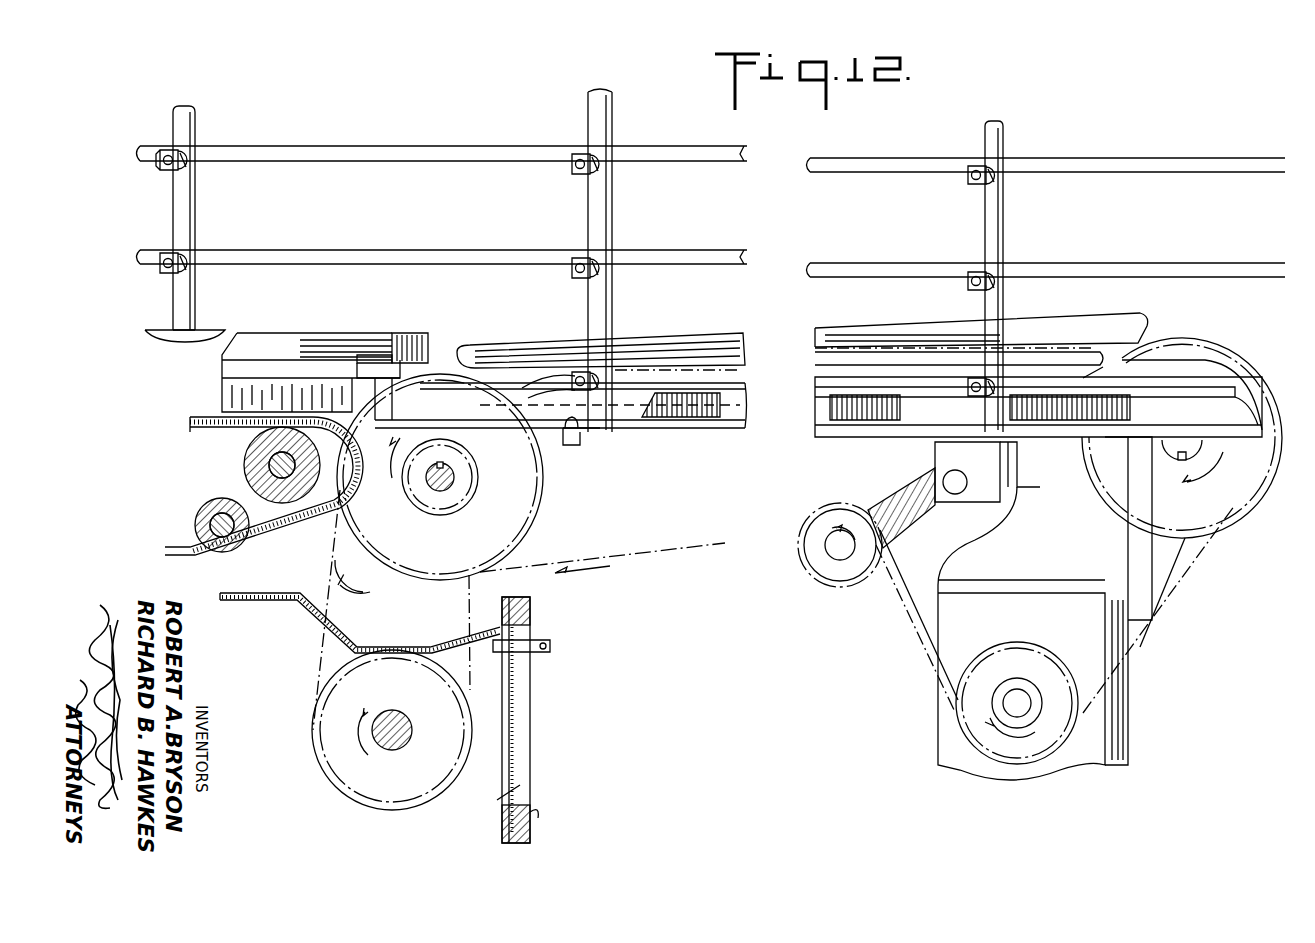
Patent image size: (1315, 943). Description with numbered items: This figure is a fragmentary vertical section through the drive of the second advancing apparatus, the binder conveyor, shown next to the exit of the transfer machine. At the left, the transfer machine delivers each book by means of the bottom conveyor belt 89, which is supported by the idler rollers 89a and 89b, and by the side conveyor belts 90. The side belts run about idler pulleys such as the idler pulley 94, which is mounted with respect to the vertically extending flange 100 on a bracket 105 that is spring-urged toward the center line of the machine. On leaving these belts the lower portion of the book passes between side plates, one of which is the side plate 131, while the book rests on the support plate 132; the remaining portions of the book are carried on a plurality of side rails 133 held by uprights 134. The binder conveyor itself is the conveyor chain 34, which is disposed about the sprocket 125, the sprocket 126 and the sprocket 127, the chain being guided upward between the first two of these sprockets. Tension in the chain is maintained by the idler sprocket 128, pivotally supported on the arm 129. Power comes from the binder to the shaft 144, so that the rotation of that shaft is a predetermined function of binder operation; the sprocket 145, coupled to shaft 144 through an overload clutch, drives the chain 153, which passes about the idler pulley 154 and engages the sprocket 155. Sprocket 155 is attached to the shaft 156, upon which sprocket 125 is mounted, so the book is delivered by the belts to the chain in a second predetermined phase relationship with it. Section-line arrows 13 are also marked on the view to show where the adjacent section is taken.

The section line 13- 13 is at (1018, 100).
The conveyor chain 34 is at (648, 553).
The bottom conveyor belt 89 is at (272, 532).
The idler roller 89a is at (252, 455).
The idler roller 89b is at (205, 508).
The side conveyor belt 90 is at (328, 368).
The idler pulley 94 is at (372, 342).
The flange 100 is at (282, 372).
The bracket 105 is at (395, 378).
The sprocket 125 is at (522, 508).
The sprocket 126 is at (1232, 492).
The sprocket 127 is at (1038, 670).
The idler sprocket 128 is at (850, 572).
The arm 129 is at (903, 506).
The side plate 131 is at (1210, 372).
The support plate 132 is at (582, 428).
The side rail 133 is at (507, 150).
The upright 134 is at (596, 217).
The shaft 144 is at (432, 697).
The sprocket 145 is at (360, 762).
The chain 153 is at (330, 650).
The idler pulley 154 is at (370, 578).
The sprocket 155 is at (455, 500).
The shaft 156 is at (452, 482).